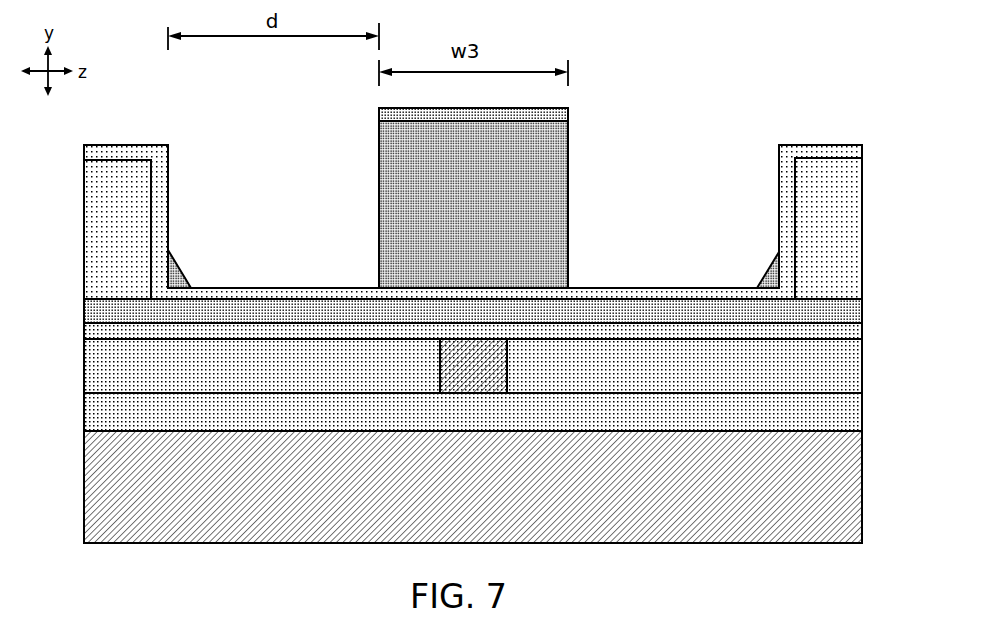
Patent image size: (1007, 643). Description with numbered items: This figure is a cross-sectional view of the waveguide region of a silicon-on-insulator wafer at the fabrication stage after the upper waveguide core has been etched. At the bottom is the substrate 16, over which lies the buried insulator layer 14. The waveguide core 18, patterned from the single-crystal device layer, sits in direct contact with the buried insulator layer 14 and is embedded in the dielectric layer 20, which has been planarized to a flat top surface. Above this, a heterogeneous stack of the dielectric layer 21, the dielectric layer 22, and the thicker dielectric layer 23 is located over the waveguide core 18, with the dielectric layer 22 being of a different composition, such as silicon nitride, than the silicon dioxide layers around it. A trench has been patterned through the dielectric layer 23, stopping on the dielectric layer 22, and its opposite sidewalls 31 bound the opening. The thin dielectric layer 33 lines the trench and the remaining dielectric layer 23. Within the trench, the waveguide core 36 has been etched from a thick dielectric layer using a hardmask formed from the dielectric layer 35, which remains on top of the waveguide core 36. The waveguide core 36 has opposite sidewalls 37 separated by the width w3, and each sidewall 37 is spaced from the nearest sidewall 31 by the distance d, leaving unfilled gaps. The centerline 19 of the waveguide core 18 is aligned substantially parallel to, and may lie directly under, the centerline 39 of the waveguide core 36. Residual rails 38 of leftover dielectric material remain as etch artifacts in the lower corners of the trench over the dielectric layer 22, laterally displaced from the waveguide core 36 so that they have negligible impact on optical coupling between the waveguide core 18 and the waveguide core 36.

The buried insulator layer 14 is at (825, 417).
The substrate 16 is at (823, 515).
The waveguide core 18 is at (485, 374).
The centerline 19 is at (473, 370).
The dielectric layer 20 is at (118, 375).
The dielectric layer 21 is at (115, 333).
The dielectric layer 22 is at (815, 312).
The dielectric layer 23 is at (115, 235).
The sidewalls 31 is at (152, 244).
The dielectric layer 33 is at (833, 152).
The dielectric layer 35 is at (545, 117).
The waveguide core 36 is at (545, 191).
The sidewalls 37 is at (379, 183).
The residual rails 38 is at (175, 272).
The centerline 39 is at (477, 203).